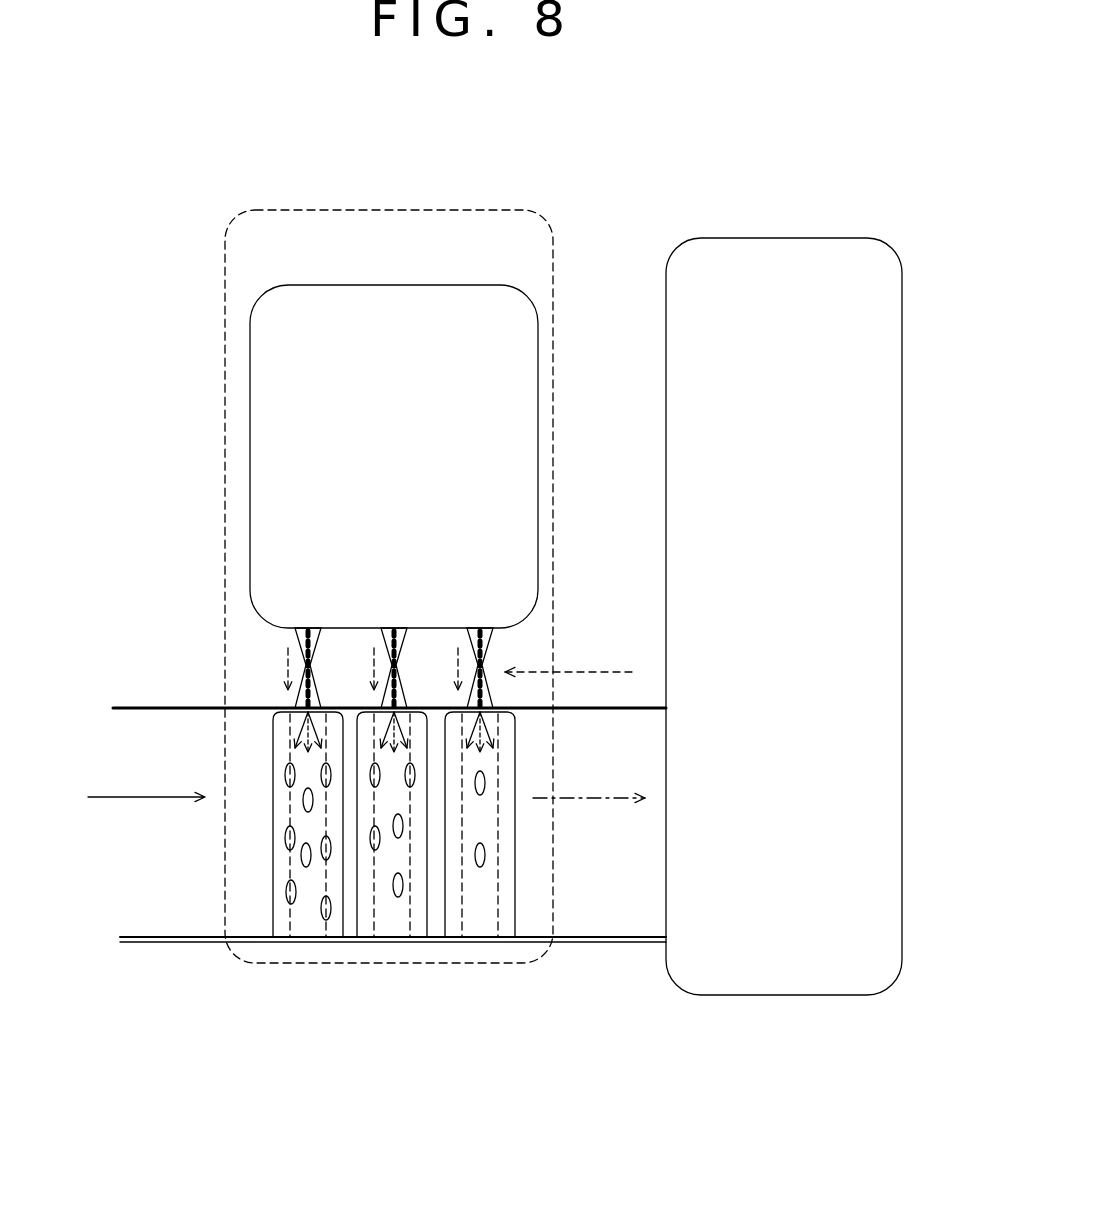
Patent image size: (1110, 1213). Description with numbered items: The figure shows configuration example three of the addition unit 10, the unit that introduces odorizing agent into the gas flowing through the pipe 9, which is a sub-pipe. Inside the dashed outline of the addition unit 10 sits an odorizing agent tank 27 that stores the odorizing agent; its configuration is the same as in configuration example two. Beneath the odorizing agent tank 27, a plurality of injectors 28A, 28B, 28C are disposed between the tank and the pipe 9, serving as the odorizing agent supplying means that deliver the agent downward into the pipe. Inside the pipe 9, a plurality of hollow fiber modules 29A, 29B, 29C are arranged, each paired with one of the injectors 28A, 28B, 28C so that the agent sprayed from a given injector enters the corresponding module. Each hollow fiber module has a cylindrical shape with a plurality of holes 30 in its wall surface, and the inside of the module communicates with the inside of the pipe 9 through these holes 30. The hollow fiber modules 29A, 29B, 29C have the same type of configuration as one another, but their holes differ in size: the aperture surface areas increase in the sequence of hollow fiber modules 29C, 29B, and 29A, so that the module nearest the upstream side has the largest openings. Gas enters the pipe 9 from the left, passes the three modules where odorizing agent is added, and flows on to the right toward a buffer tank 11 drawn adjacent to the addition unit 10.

The pipe 9 is at (178, 707).
The addition unit 10 is at (545, 216).
The buffer tank 11 is at (744, 238).
The odorizing agent tank 27 is at (538, 413).
The injector 28A is at (296, 631).
The injector 28B is at (427, 677).
The injector 28C is at (491, 640).
The hollow fiber module 29A is at (280, 925).
The hollow fiber module 29B is at (370, 925).
The hollow fiber module 29C is at (473, 925).
The hole 30 is at (285, 838).